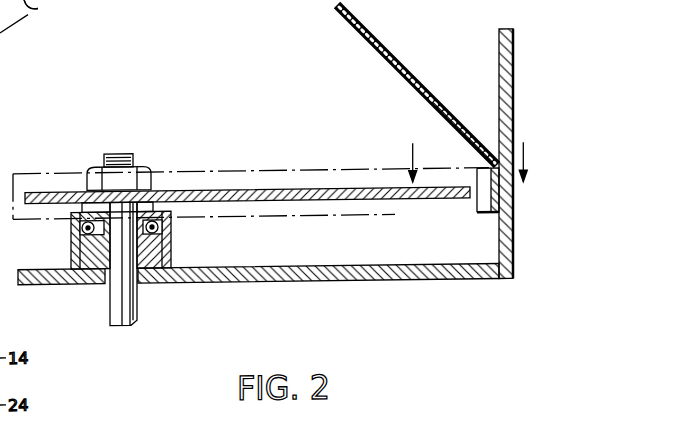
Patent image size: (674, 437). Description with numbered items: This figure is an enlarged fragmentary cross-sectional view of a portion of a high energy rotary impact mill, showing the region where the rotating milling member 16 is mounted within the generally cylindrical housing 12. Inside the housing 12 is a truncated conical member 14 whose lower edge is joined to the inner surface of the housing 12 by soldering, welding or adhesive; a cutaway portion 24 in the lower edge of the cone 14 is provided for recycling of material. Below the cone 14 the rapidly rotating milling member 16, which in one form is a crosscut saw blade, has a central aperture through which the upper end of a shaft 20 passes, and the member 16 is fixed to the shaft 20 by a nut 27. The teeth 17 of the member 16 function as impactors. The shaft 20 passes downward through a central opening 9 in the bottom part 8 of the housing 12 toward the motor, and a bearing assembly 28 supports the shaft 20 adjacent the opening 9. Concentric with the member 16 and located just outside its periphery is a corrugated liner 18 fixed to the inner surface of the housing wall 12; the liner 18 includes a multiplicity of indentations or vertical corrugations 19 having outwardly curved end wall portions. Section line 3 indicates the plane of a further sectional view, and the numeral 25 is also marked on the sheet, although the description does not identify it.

The section line 3- 3 is at (466, 162).
The bottom part 8 is at (343, 275).
The central opening 9 is at (103, 270).
The housing 12 is at (500, 74).
The truncated conical member 14 is at (400, 67).
The milling member 16 is at (290, 202).
The teeth 17 is at (468, 204).
The corrugated liner 18 is at (391, 224).
The vertical corrugations 19 is at (480, 184).
The shaft 20 is at (140, 302).
The cutaway portion 24 is at (455, 124).
The frame portion 25 is at (5, 47).
The nut 27 is at (127, 179).
The bearing assembly 28 is at (167, 230).